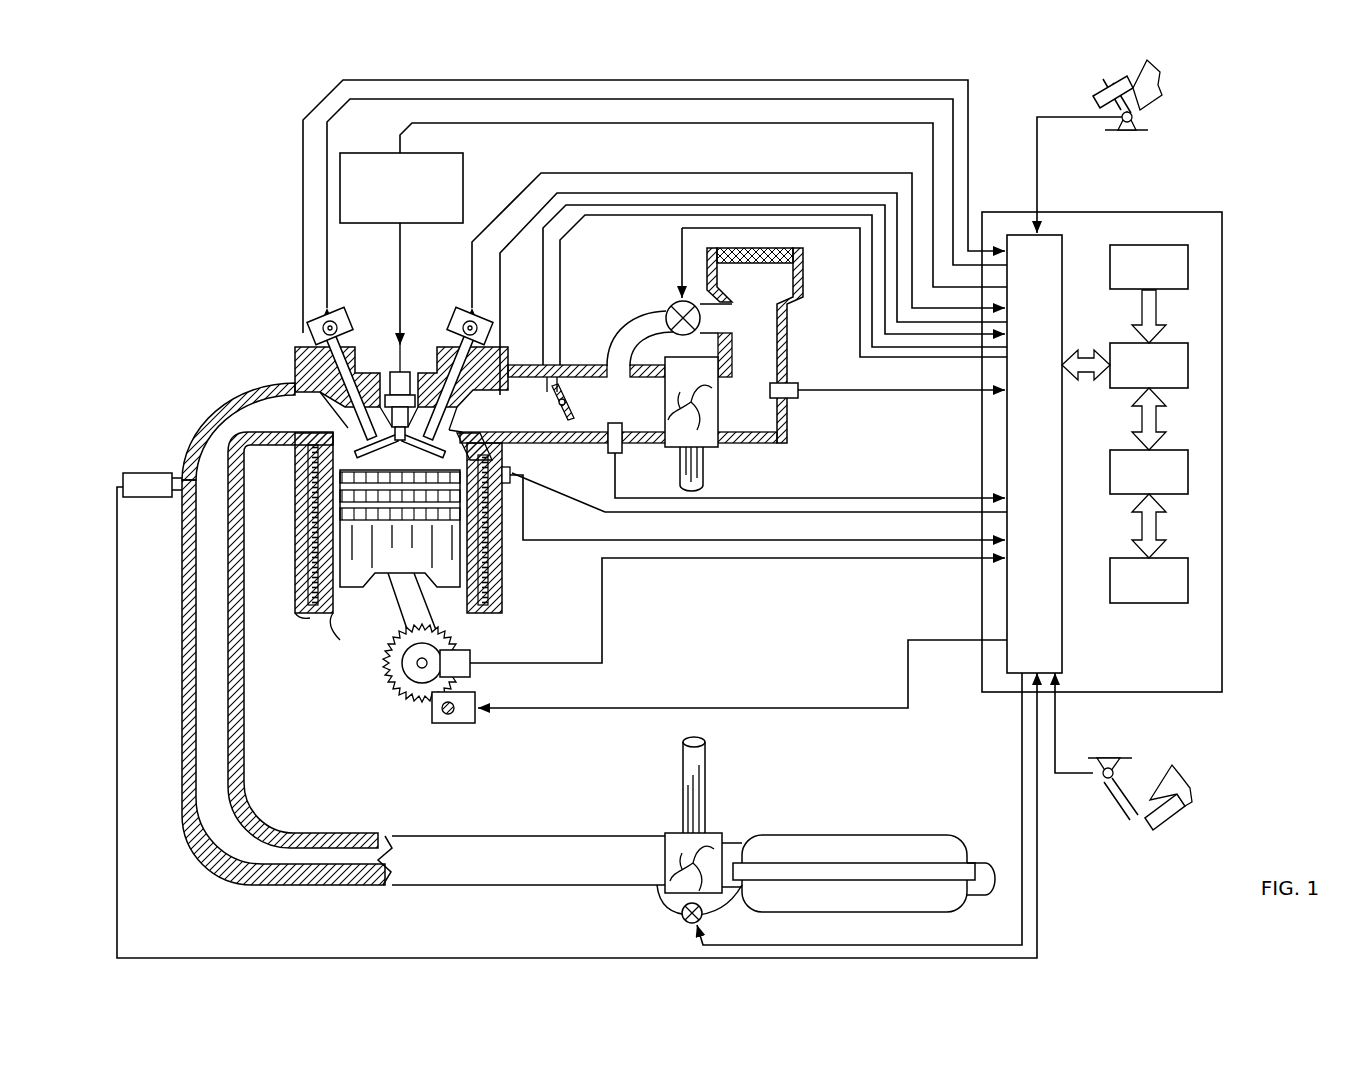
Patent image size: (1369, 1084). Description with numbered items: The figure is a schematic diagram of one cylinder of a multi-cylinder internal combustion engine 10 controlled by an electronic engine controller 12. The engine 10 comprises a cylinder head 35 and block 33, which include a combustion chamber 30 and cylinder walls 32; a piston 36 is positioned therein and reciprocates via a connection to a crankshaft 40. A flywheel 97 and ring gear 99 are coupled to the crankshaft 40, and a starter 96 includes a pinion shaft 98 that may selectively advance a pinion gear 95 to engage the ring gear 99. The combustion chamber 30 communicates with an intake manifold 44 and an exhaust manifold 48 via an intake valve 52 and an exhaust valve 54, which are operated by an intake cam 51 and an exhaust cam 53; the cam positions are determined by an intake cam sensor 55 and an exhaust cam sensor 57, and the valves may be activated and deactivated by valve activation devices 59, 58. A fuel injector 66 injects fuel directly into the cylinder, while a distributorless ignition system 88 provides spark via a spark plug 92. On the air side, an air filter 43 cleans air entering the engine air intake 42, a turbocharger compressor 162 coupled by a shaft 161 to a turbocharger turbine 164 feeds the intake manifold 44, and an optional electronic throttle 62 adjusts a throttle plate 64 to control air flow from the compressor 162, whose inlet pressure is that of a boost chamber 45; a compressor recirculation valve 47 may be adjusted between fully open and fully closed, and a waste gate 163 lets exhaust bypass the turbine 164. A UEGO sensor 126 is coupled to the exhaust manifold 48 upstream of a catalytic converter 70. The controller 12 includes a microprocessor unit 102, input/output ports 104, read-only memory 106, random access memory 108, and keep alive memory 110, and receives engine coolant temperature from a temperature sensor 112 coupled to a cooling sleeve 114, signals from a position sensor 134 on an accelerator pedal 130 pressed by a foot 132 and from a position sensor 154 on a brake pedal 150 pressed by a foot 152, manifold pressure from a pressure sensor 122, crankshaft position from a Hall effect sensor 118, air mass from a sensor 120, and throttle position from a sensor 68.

The internal combustion engine 10 is at (232, 298).
The electronic engine controller 12 is at (1222, 212).
The combustion chamber 30 is at (302, 560).
The cylinder walls 32 is at (342, 602).
The block 33 is at (292, 500).
The cylinder head 35 is at (290, 345).
The piston 36 is at (386, 565).
The crankshaft 40 is at (410, 688).
The engine air intake 42 is at (622, 272).
The air filter 43 is at (762, 264).
The intake manifold 44 is at (508, 416).
The boost chamber 45 is at (615, 416).
The compressor recirculation valve 47 is at (673, 306).
The exhaust manifold 48 is at (275, 424).
The intake cam 51 is at (462, 320).
The intake valve 52 is at (448, 410).
The exhaust cam 53 is at (338, 320).
The exhaust valve 54 is at (300, 392).
The intake cam sensor 55 is at (488, 338).
The exhaust cam sensor 57 is at (318, 333).
The valve activation device 58 is at (350, 336).
The valve activation device 59 is at (466, 342).
The electronic throttle 62 is at (566, 410).
The throttle plate 64 is at (566, 420).
The fuel injector 66 is at (522, 476).
The throttle position sensor 68 is at (500, 372).
The catalytic converter 70 is at (788, 835).
The distributorless ignition system 88 is at (355, 153).
The spark plug 92 is at (402, 370).
The pinion gear 95 is at (462, 726).
The starter 96 is at (477, 725).
The flywheel 97 is at (392, 664).
The pinion shaft 98 is at (445, 722).
The ring gear 99 is at (420, 704).
The microprocessor unit 102 is at (1188, 365).
The input/output ports 104 is at (1063, 242).
The read-only memory 106 is at (1188, 270).
The random access memory 108 is at (1188, 472).
The keep alive memory 110 is at (1188, 582).
The temperature sensor 112 is at (754, 500).
The cooling sleeve 114 is at (492, 568).
The Hall effect sensor 118 is at (472, 660).
The air mass sensor 120 is at (798, 388).
The pressure sensor 122 is at (610, 447).
The UEGO sensor 126 is at (123, 478).
The accelerator pedal 130 is at (1105, 92).
The foot 132 is at (1158, 80).
The position sensor 134 is at (1150, 125).
The brake pedal 150 is at (1133, 825).
The foot 152 is at (1172, 790).
The position sensor 154 is at (1097, 765).
The shaft 161 is at (680, 470).
The turbocharger compressor 162 is at (706, 432).
The waste gate 163 is at (688, 920).
The turbocharger turbine 164 is at (672, 833).